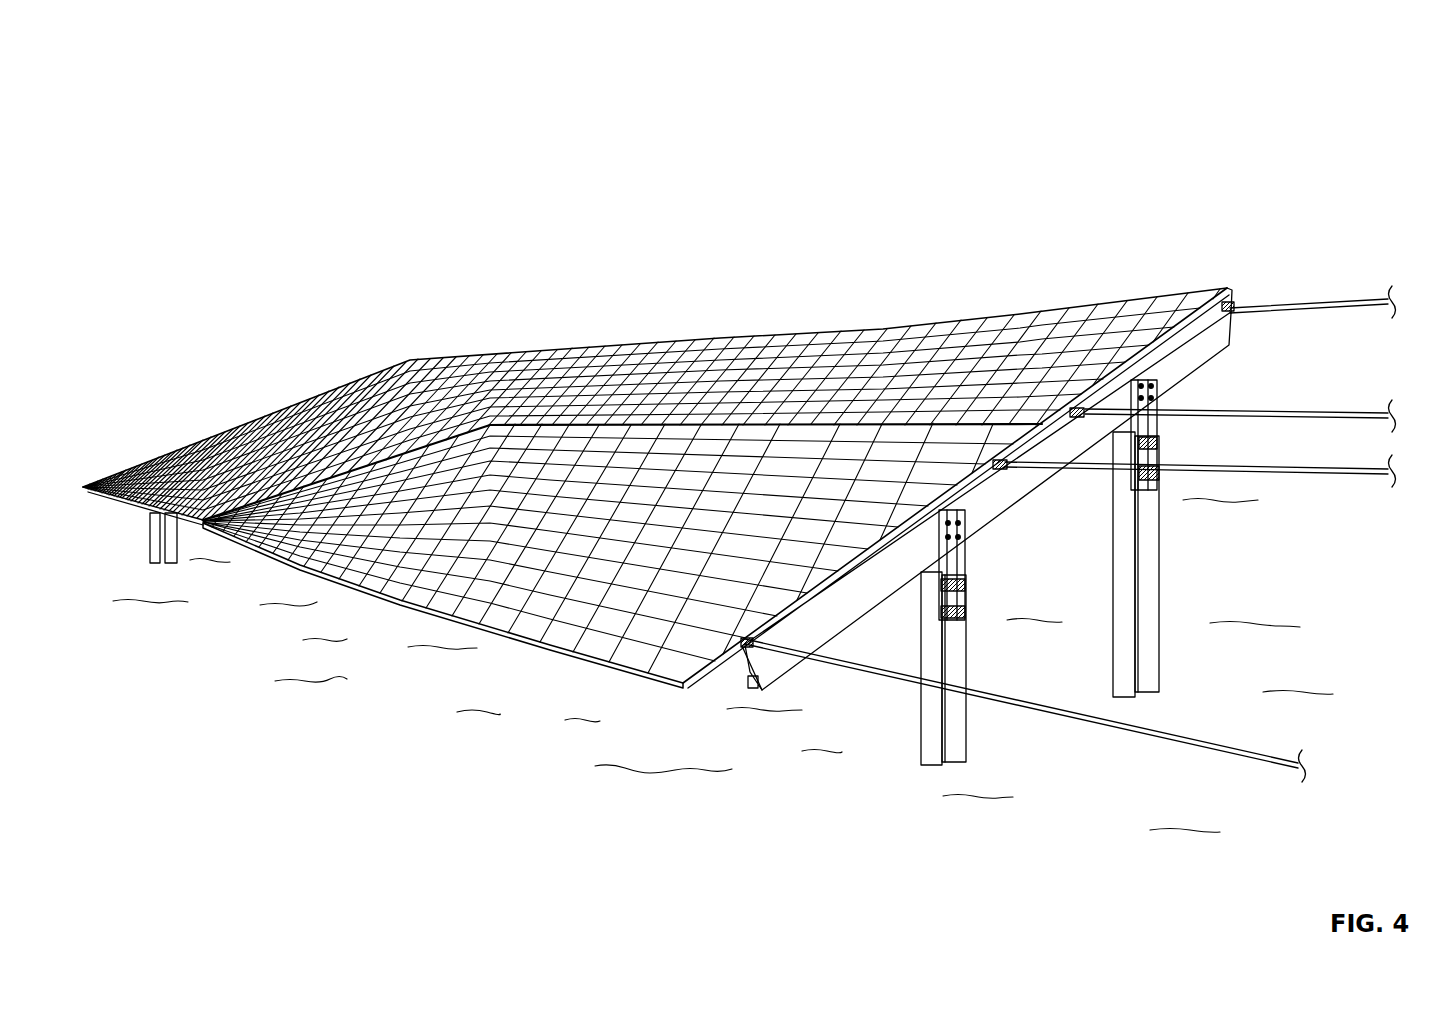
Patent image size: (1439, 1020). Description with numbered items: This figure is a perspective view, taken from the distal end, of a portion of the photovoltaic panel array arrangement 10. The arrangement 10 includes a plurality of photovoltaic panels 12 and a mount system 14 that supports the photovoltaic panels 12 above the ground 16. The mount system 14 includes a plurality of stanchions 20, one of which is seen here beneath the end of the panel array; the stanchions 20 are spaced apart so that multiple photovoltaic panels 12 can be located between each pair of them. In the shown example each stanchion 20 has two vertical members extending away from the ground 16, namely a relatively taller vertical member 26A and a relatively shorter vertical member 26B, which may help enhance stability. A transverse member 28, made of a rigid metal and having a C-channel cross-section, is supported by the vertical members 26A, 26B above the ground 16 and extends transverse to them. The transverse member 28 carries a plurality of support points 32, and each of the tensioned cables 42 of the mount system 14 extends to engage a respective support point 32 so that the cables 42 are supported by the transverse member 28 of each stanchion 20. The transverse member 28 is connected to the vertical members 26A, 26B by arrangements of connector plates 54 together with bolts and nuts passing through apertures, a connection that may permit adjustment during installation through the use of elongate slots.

The photovoltaic panel array arrangement 10 is at (124, 103).
The photovoltaic panels 12 is at (932, 348).
The mount system 14 is at (916, 750).
The ground 16 is at (458, 697).
The stanchions 20 is at (1170, 612).
The relatively taller vertical member 26A is at (1160, 564).
The relatively shorter vertical member 26B is at (968, 717).
The transverse member 28 is at (1186, 358).
The support points 32 is at (1227, 290).
The cables 42 is at (1280, 468).
The connector plates 54 is at (1148, 418).